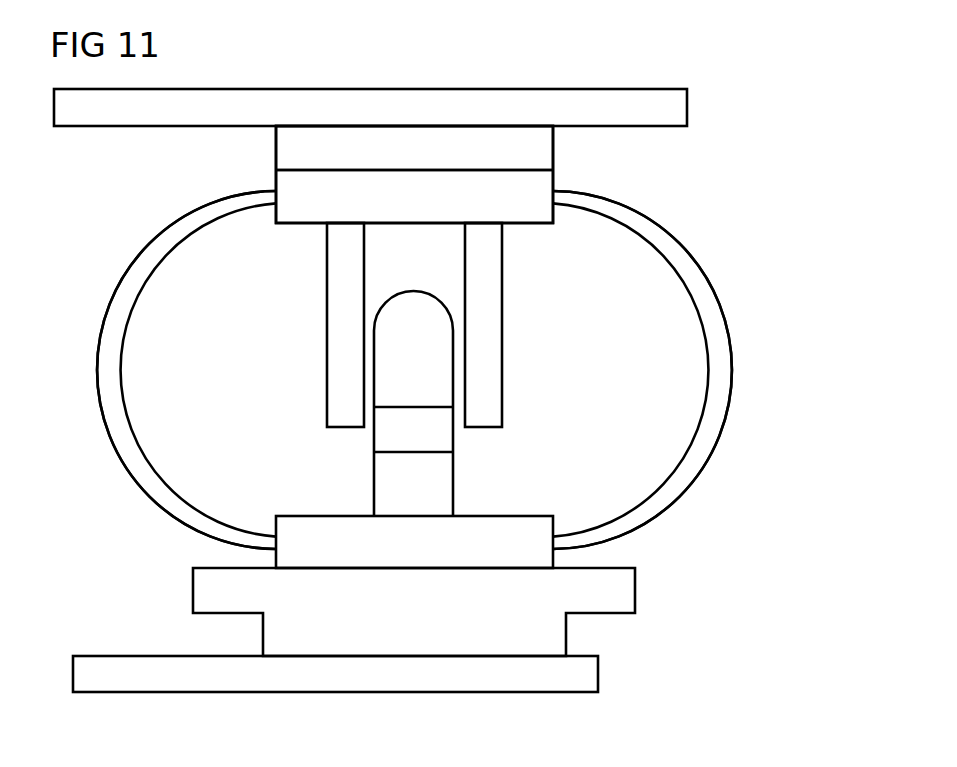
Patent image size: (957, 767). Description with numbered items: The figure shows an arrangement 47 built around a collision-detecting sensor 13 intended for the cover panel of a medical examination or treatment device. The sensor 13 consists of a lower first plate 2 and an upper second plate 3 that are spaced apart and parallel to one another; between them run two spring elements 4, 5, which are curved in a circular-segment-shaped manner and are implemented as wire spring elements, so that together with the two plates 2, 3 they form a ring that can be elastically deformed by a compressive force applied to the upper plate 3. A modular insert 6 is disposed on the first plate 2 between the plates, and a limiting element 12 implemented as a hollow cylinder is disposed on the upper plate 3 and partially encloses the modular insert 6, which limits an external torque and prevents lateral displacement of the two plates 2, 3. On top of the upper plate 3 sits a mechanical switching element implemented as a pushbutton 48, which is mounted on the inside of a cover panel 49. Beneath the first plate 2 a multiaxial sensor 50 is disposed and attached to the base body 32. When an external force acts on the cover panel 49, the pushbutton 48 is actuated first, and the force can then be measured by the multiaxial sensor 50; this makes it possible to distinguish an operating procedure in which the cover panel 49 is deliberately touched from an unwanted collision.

The cover panel 49 is at (687, 112).
The pushbutton 48 is at (553, 148).
The second plate 3 is at (275, 182).
The spring element 4 is at (112, 367).
The spring element 5 is at (716, 372).
The arrangement 47 is at (765, 318).
The sensor 13 is at (702, 213).
The limiting element 12 is at (502, 307).
The modular insert 6 is at (492, 477).
The first plate 2 is at (553, 561).
The multiaxial sensor 50 is at (636, 596).
The base body 32 is at (598, 673).